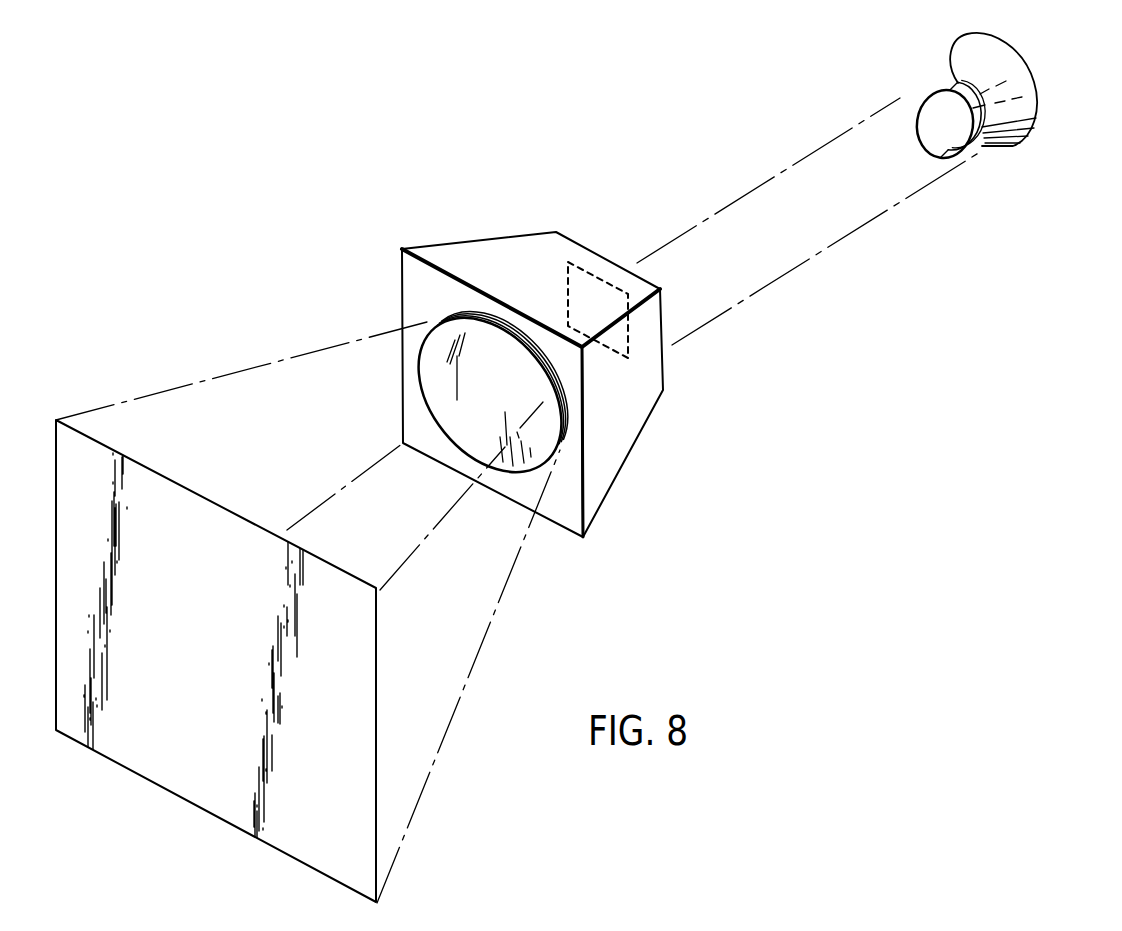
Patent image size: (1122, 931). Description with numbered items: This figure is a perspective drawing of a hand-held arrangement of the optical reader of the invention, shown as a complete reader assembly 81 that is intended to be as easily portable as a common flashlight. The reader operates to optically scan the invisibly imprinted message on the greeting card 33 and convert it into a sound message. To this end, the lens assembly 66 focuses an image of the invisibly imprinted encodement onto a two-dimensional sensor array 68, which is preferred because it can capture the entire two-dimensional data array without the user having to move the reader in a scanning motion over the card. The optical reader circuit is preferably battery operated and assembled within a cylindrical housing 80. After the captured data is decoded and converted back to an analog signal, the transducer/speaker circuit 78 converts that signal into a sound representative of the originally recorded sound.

The greeting card 33 is at (170, 497).
The lens assembly 66 is at (438, 346).
The two-dimensional sensor array 68 is at (593, 287).
The transducer/speaker circuit 78 is at (1040, 100).
The cylindrical housing 80 is at (760, 183).
The reader assembly 81 is at (512, 168).